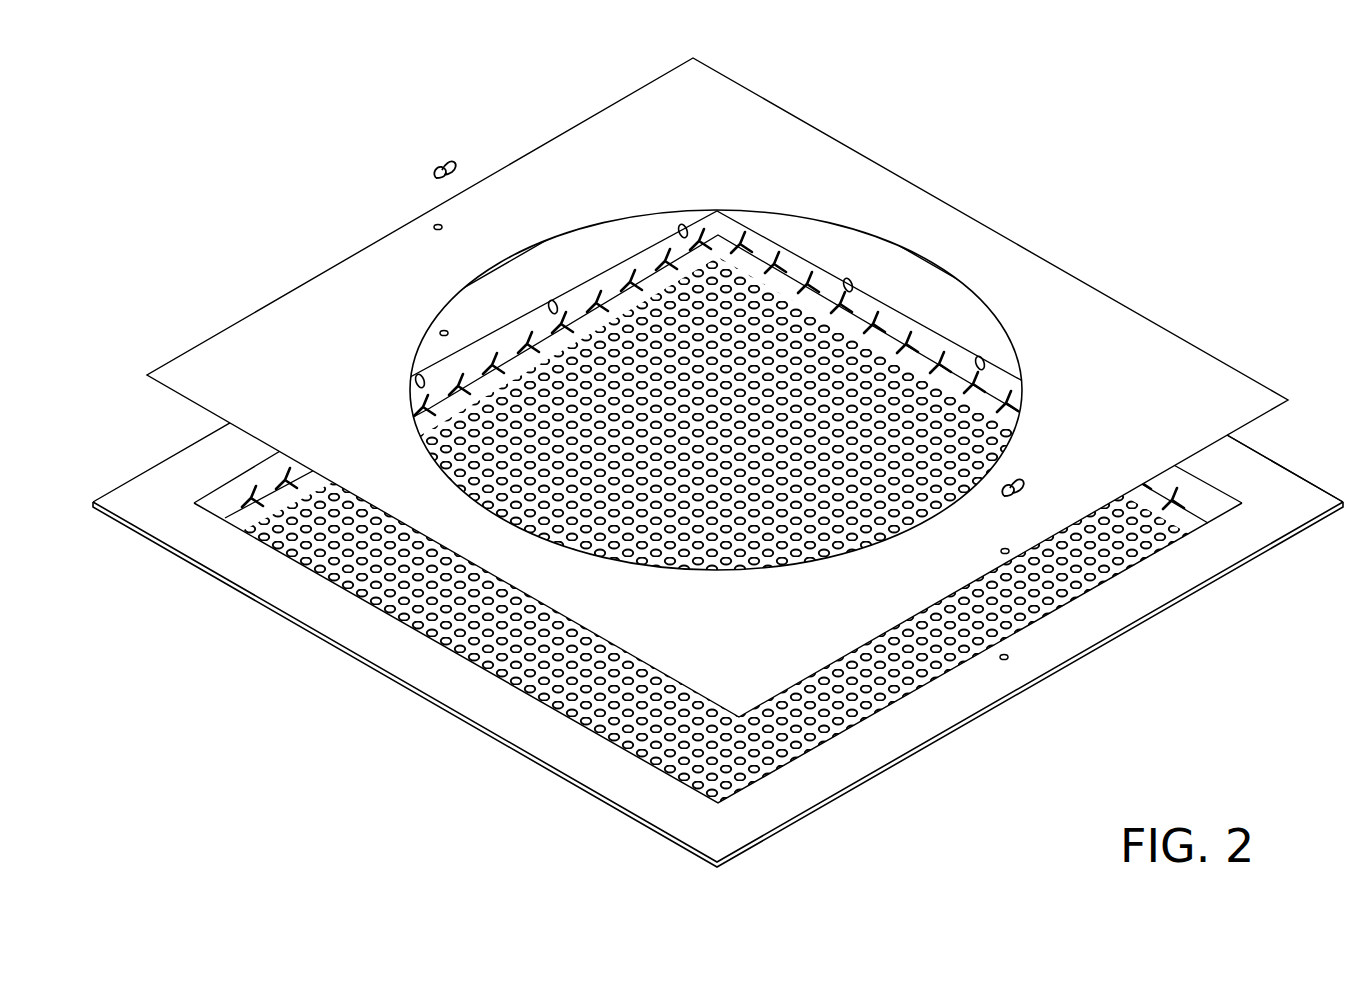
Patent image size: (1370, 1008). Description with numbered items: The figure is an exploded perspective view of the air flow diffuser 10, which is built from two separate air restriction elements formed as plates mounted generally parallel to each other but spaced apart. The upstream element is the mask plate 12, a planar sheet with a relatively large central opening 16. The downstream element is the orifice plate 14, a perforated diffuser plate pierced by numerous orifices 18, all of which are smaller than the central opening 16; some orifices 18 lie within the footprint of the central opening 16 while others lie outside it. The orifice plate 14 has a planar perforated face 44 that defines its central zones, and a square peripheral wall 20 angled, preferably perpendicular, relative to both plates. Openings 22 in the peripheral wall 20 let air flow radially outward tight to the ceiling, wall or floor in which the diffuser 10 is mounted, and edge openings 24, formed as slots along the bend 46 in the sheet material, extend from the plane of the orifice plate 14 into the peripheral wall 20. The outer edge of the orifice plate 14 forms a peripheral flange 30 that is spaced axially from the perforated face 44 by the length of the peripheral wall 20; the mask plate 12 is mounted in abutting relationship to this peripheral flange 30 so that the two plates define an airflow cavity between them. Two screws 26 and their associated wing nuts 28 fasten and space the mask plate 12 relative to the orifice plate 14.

The air flow diffuser 10 is at (341, 158).
The mask plate 12 is at (728, 98).
The orifice plate 14 is at (850, 762).
The central opening 16 is at (897, 320).
The orifices 18 is at (553, 638).
The peripheral wall 20 is at (925, 357).
The openings 22 is at (850, 282).
The edge openings 24 is at (940, 355).
The screws 26 is at (447, 334).
The wing nuts 28 is at (444, 169).
The peripheral flange 30 is at (1168, 573).
The perforated face 44 is at (745, 476).
The bend 46 is at (945, 360).